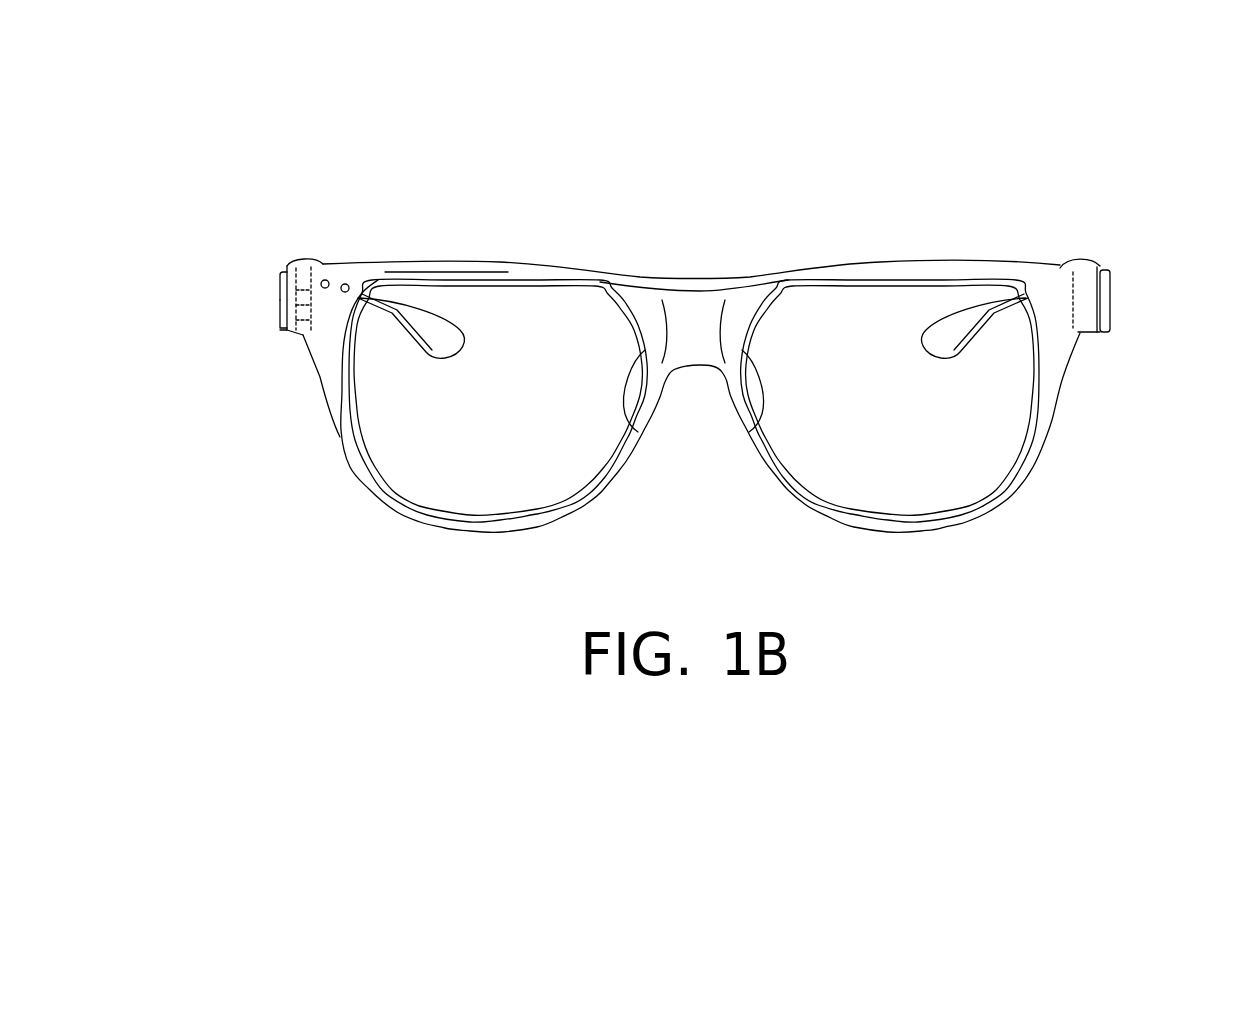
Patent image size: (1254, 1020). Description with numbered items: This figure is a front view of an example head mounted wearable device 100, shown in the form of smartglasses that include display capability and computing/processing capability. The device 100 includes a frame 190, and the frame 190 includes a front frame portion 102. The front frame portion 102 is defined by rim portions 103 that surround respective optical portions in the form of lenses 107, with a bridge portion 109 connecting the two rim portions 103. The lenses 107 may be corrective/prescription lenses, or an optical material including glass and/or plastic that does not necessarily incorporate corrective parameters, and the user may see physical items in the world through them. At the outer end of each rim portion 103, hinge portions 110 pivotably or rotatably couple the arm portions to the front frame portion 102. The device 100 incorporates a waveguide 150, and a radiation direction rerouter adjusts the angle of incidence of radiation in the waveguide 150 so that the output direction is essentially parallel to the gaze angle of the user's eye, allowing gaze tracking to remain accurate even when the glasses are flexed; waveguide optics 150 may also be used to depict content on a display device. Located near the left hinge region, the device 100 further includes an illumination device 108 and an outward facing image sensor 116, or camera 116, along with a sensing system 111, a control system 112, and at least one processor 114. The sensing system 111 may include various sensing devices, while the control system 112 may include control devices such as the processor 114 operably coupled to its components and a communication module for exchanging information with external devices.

The head mounted wearable device 100 is at (166, 184).
The front frame portion 102 is at (952, 246).
The rim portion 103 is at (337, 438).
The lens 107 is at (462, 460).
The illumination device 108 is at (328, 280).
The bridge portion 109 is at (690, 310).
The hinge portion 110 is at (288, 250).
The sensing system 111 is at (282, 284).
The control system 112 is at (283, 305).
The processor 114 is at (287, 331).
The outward facing image sensor 116 is at (346, 285).
The waveguide 150 is at (492, 272).
The frame 190 is at (286, 376).